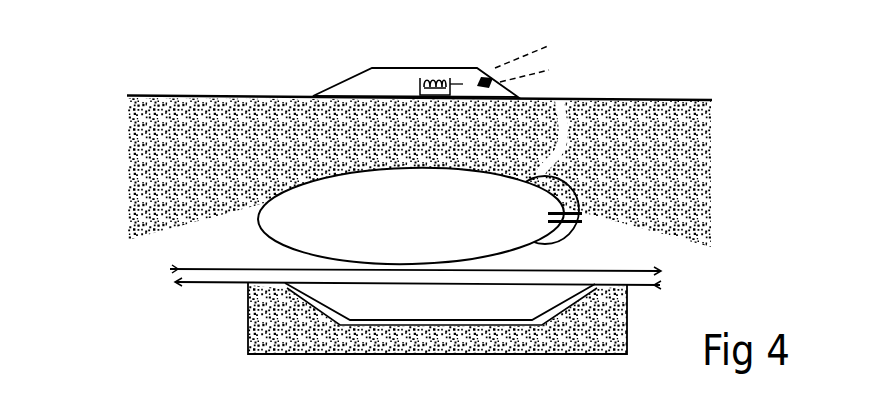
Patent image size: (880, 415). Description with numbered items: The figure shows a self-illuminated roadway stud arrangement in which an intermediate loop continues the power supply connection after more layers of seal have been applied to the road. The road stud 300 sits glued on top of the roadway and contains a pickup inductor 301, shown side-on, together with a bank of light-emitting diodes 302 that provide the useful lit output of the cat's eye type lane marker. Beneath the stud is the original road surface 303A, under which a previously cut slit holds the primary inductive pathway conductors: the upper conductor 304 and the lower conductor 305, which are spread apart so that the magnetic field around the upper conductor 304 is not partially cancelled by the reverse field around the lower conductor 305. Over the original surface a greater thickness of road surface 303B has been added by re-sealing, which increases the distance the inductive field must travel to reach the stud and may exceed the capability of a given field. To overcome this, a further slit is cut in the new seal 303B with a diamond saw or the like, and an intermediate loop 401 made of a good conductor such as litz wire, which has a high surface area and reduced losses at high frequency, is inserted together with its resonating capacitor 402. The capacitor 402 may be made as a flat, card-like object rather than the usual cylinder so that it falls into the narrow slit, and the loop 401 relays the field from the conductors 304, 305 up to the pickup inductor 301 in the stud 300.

The road stud 300 is at (388, 67).
The pickup inductor 301 is at (452, 48).
The bank of light-emitting diodes 302 is at (481, 74).
The original road surface 303A is at (125, 103).
The greater thickness of road surface 303B is at (716, 113).
The upper primary inductive pathway conductor 304 is at (182, 269).
The lower primary inductive pathway conductor 305 is at (181, 283).
The intermediate loop 401 is at (540, 176).
The resonating capacitor 402 is at (584, 220).